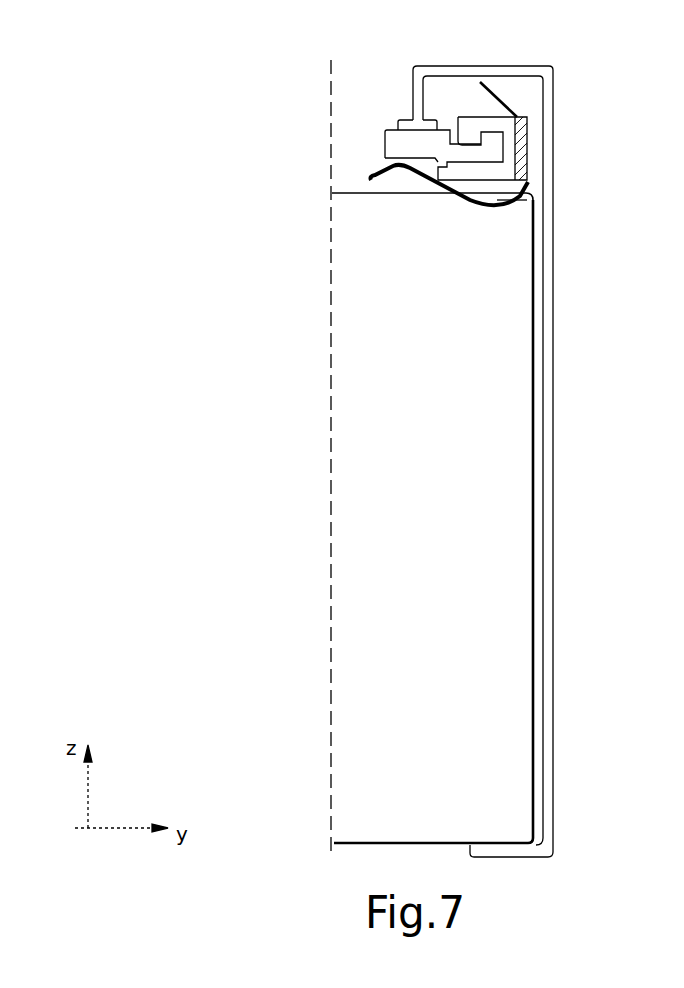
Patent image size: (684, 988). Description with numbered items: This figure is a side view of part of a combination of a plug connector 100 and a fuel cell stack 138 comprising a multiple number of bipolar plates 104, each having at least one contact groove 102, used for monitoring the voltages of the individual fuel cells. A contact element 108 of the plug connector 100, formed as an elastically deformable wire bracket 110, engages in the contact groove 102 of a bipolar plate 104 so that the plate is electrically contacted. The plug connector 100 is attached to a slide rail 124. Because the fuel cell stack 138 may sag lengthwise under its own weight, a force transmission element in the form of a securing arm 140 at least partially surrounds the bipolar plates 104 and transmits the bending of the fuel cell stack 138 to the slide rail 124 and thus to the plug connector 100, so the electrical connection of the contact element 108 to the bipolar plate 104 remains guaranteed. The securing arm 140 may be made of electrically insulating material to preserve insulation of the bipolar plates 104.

The plug connector 100 is at (522, 138).
The contact groove 102 is at (531, 199).
The bipolar plate 104 is at (513, 403).
The contact element 108 is at (503, 90).
The wire bracket 110 is at (473, 206).
The slide rail 124 is at (397, 147).
The fuel cell stack 138 is at (508, 650).
The securing arm 140 is at (553, 307).